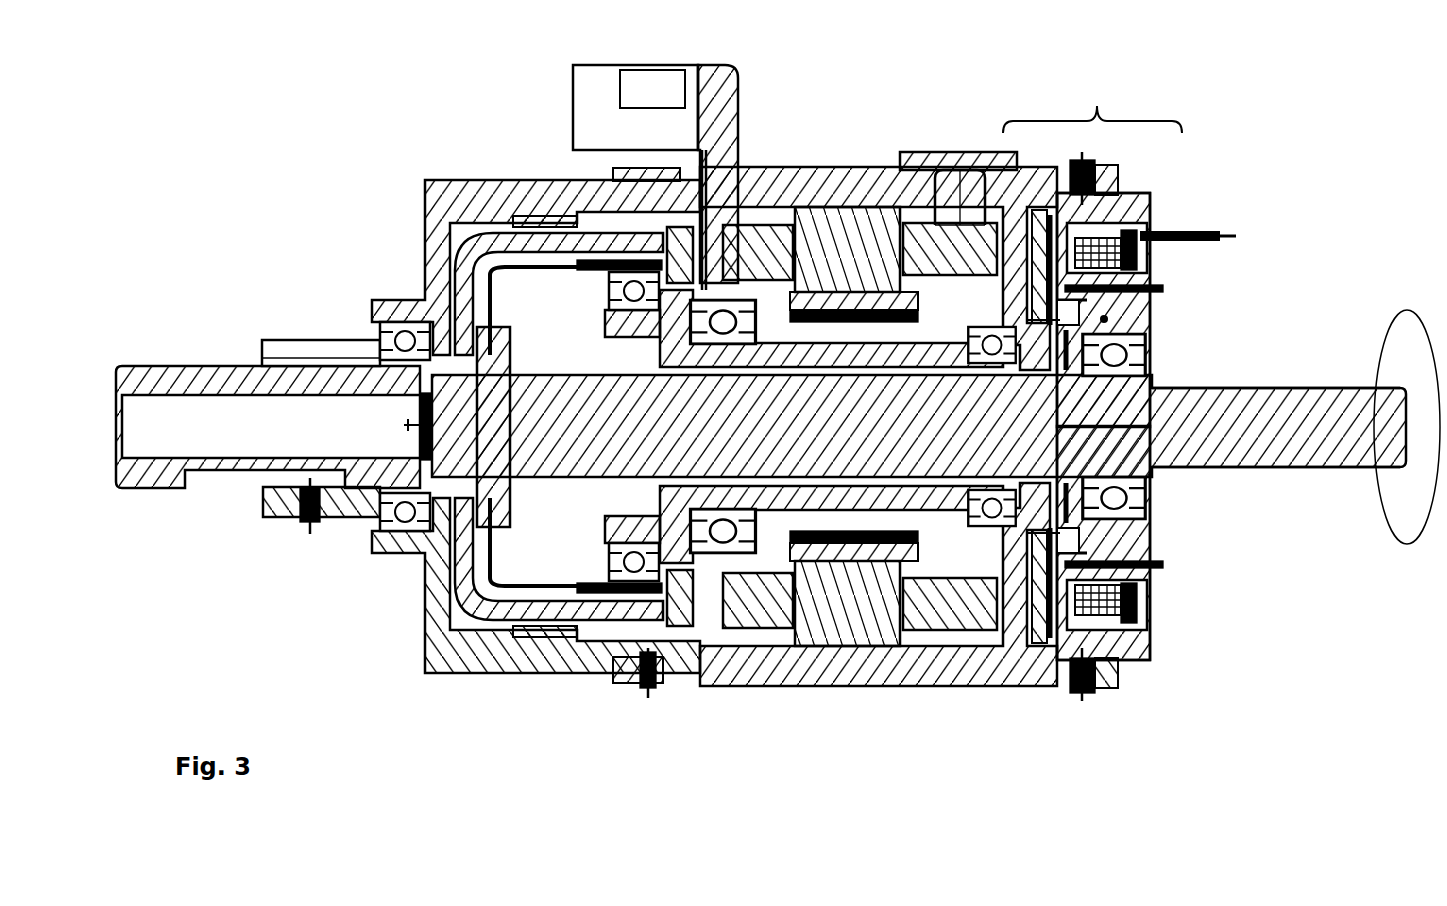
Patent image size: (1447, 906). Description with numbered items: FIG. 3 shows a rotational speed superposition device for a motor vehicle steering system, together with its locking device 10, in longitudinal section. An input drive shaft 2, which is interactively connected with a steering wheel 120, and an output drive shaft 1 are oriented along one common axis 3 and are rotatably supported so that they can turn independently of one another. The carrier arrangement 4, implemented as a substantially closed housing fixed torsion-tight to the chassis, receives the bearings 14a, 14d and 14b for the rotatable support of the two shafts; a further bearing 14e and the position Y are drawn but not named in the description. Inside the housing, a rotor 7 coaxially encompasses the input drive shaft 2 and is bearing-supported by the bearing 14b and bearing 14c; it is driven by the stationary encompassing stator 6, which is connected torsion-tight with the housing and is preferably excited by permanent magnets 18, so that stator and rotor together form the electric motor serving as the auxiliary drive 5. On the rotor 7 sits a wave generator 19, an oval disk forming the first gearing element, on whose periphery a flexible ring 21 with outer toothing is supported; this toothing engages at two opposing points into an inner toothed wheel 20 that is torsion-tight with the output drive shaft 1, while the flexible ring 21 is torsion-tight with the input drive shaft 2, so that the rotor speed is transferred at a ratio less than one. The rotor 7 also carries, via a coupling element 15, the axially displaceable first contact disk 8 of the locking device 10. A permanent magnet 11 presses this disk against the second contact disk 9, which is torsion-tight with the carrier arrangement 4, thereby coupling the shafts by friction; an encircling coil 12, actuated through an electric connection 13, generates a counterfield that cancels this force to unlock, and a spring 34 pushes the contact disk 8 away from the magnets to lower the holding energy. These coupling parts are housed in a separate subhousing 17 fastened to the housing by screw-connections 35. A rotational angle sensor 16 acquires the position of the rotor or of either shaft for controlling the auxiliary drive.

The output drive shaft 1 is at (215, 378).
The input drive shaft 2 is at (1270, 405).
The axis 3 is at (1335, 423).
The carrier arrangement 4 is at (455, 203).
The auxiliary drive 5 is at (958, 240).
The stator 6 is at (847, 243).
The rotor 7 is at (917, 520).
The first contact disk 8 is at (993, 528).
The second contact disk 9 is at (1040, 612).
The locking device 10 is at (1092, 101).
The permanent magnet 11 is at (1155, 648).
The coil 12 is at (1098, 603).
The electric connection 13 is at (1220, 233).
The bearing 14a is at (1158, 567).
The roller bearing 14b is at (945, 493).
The bearing 14c is at (735, 553).
The bearing 14d is at (392, 530).
The flange 14e is at (445, 590).
The coupling element 15 is at (1150, 360).
The rotational angle sensor 16 is at (657, 122).
The subhousing 17 is at (1128, 647).
The permanent magnets 18 is at (838, 550).
The wave generator 19 is at (650, 692).
The inner toothed wheel 20 is at (600, 607).
The flexible ring 21 is at (592, 255).
The spring 34 is at (1087, 312).
The screw-connections 35 is at (1120, 170).
The steering wheel 120 is at (1403, 533).
The gap Y is at (1104, 319).